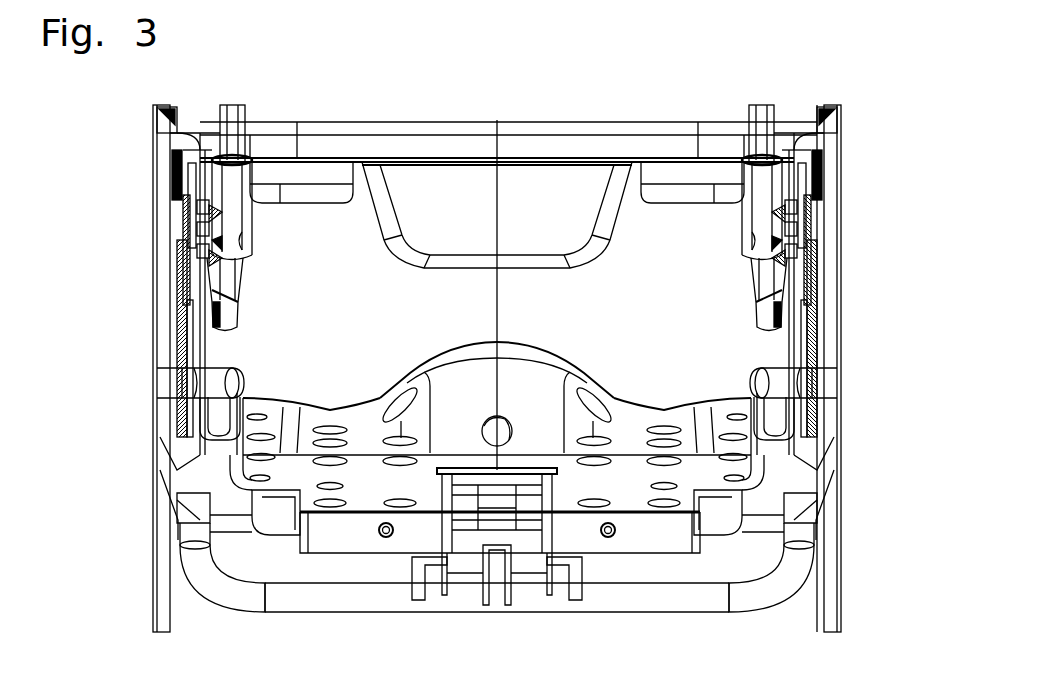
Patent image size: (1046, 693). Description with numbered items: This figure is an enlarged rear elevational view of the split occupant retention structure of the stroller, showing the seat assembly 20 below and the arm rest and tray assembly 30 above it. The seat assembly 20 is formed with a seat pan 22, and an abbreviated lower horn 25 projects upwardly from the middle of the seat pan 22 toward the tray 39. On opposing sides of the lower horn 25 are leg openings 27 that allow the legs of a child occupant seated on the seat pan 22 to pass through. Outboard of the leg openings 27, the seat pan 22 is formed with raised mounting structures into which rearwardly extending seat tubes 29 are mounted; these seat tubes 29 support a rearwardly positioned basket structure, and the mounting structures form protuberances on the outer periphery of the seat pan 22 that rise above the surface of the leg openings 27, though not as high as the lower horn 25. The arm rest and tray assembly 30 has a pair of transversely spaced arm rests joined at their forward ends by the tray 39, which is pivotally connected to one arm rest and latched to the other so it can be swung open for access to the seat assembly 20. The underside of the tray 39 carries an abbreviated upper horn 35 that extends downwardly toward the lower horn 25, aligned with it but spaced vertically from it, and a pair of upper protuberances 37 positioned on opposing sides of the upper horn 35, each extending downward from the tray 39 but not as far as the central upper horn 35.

The arm rest and tray assembly 30 is at (422, 97).
The tray 39 is at (531, 125).
The upper protuberances 37 is at (307, 203).
The upper horn 35 is at (556, 262).
The leg openings 27 is at (292, 290).
The lower horn 25 is at (440, 376).
The seat pan 22 is at (630, 420).
The seat tubes 29 is at (213, 413).
The seat assembly 20 is at (297, 383).